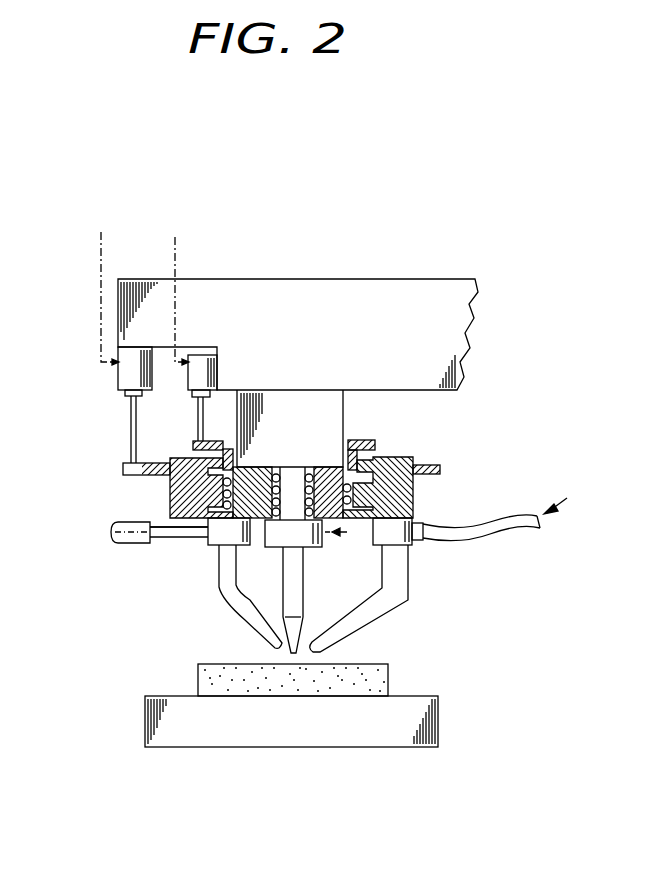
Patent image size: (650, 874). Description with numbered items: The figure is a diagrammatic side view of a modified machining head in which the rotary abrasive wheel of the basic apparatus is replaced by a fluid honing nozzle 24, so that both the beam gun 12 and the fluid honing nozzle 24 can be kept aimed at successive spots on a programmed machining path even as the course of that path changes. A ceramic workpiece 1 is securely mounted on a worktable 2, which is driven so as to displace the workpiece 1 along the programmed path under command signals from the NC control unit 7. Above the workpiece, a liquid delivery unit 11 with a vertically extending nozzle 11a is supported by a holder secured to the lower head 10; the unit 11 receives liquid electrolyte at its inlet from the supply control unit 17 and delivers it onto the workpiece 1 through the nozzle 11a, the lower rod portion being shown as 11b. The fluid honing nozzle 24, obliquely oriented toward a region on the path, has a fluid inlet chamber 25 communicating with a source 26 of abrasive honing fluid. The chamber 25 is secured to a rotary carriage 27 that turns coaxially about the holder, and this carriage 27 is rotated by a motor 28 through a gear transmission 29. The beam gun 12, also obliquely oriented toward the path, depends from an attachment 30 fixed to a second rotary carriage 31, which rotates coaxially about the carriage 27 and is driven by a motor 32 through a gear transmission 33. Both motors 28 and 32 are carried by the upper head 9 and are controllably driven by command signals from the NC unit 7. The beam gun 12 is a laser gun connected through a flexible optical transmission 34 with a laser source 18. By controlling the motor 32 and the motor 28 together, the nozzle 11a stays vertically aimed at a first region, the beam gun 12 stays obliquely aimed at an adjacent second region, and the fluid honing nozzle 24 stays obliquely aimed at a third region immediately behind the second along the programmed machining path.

The workpiece 1 is at (382, 678).
The worktable 2 is at (432, 718).
The control unit 7 is at (141, 278).
The upper head 9 is at (381, 283).
The lower head 10 is at (343, 404).
The liquid delivery unit 11 is at (310, 546).
The nozzle 11a is at (302, 588).
The pin rod 11b is at (215, 535).
The beam gun 12 is at (363, 627).
The supply control unit 17 is at (346, 541).
The source of laser 18 is at (563, 497).
The fluid honing nozzle 24 is at (223, 585).
The fluid inlet chamber 25 is at (292, 480).
The source of abrasive honing fluid 26 is at (98, 524).
The rotary carriage 27 is at (250, 545).
The motor 28 is at (192, 395).
The gear transmission 29 is at (222, 444).
The attachment 30 is at (408, 550).
The rotary carriage 31 is at (402, 490).
The motor 32 is at (117, 383).
The gear transmission 33 is at (133, 475).
The flexible optical transmission 34 is at (510, 536).